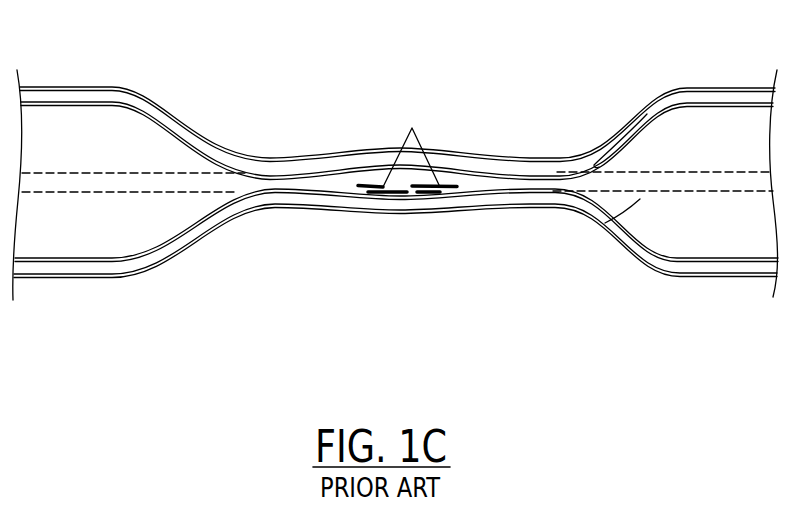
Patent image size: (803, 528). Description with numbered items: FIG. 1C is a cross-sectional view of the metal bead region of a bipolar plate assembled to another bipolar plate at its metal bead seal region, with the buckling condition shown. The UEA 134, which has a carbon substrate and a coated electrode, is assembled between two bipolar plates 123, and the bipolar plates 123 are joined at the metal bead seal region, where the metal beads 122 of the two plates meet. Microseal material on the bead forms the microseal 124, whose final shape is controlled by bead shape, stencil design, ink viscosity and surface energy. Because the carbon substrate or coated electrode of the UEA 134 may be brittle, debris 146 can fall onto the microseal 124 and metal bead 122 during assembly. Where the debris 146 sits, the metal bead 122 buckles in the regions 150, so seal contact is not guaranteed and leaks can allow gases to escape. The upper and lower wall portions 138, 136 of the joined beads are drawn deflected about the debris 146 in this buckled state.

The metal bead 122 is at (647, 114).
The bipolar plate 123 is at (737, 89).
The microseal 124 is at (239, 180).
The UEA 134 is at (155, 172).
The lower wall bulge 136 is at (441, 232).
The upper wall bulge 138 is at (370, 132).
The debris 146 is at (412, 128).
The region 150 is at (453, 141).